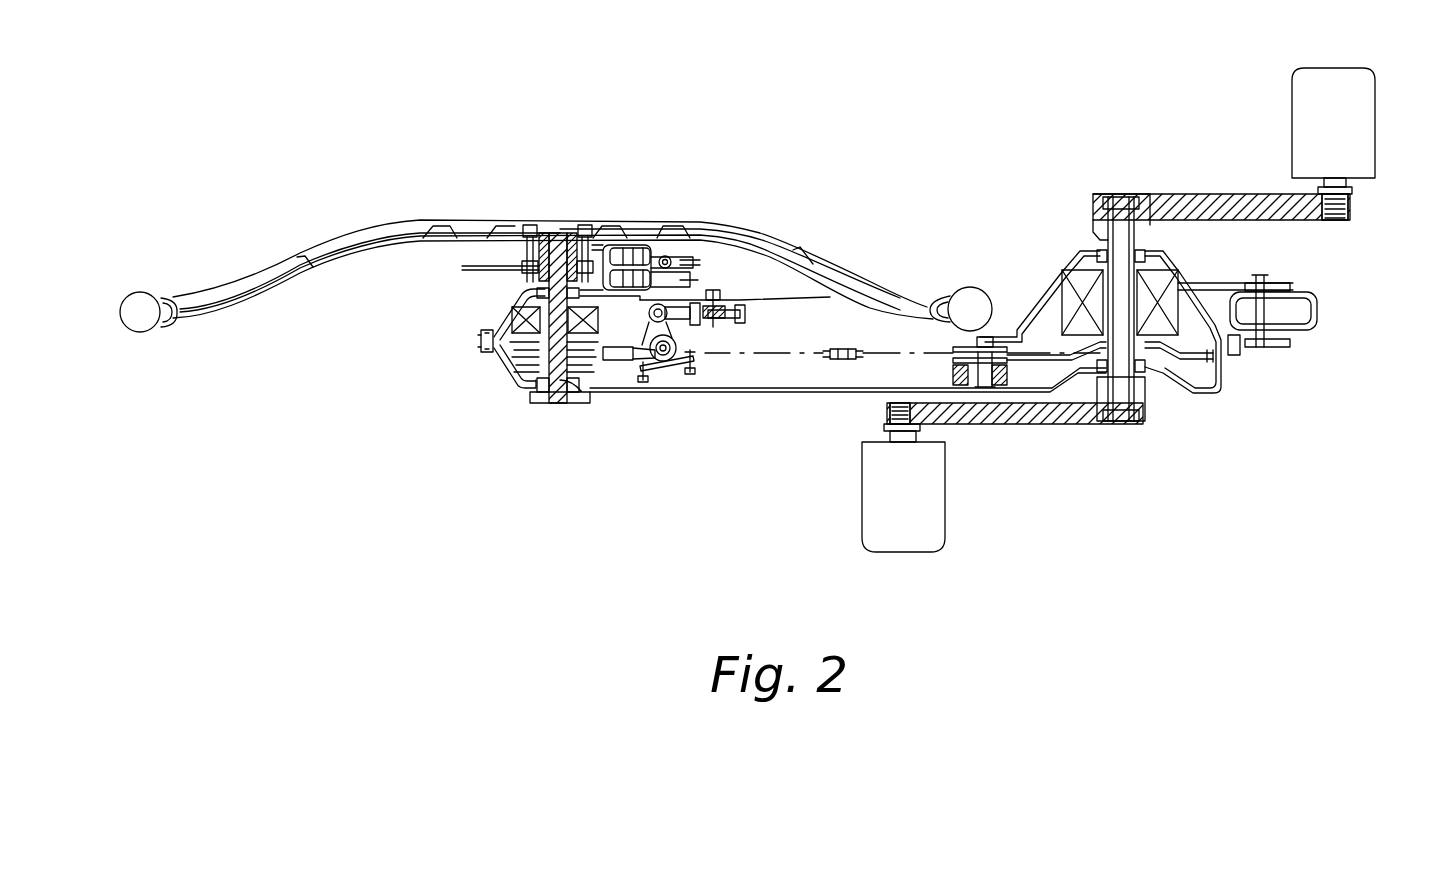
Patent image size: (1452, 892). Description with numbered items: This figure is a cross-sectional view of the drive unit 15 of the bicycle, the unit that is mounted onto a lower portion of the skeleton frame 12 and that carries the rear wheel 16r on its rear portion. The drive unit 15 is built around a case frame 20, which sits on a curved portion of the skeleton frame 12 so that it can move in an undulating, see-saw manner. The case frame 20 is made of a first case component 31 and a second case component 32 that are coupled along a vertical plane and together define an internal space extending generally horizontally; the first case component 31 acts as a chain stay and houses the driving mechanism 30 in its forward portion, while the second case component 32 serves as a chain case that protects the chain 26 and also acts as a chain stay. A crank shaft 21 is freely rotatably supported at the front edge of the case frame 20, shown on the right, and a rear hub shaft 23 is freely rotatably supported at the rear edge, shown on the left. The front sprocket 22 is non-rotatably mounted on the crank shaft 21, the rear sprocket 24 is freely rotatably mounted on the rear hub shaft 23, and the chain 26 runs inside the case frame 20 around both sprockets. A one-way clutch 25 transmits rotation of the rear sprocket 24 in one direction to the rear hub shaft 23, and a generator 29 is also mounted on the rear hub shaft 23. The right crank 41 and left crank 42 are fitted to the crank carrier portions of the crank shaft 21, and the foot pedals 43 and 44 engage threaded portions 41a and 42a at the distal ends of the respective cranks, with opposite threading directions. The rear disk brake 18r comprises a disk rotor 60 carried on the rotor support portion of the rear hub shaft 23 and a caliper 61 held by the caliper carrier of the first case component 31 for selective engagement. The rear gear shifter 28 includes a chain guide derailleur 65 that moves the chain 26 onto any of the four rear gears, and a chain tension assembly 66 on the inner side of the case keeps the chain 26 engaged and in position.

The skeleton frame 12 is at (1318, 325).
The drive unit 15 is at (722, 420).
The rear wheel 16r is at (965, 285).
The rear disk brake 18r is at (715, 258).
The case frame 20 is at (786, 398).
The crank shaft 21 is at (1127, 267).
The front sprocket 22 is at (1195, 395).
The rear hub shaft 23 is at (547, 232).
The rear sprocket 24 is at (523, 352).
The one-way clutch 25 is at (543, 397).
The chain 26 is at (825, 302).
The rear gear shifter 28 is at (676, 383).
The generator 29 is at (515, 301).
The driving mechanism 30 is at (1185, 283).
The first case component 31 is at (843, 345).
The second case component 32 is at (838, 393).
The right crank 41 is at (1198, 196).
The threaded portion 41a is at (1335, 220).
The left crank 42 is at (1064, 422).
The threaded portion 42a is at (898, 414).
The foot pedal 43 is at (1375, 138).
The foot pedal 44 is at (945, 535).
The disk rotor 60 is at (478, 266).
The caliper 61 is at (652, 248).
The chain guide derailleur 65 is at (615, 362).
The chain tension assembly 66 is at (990, 388).